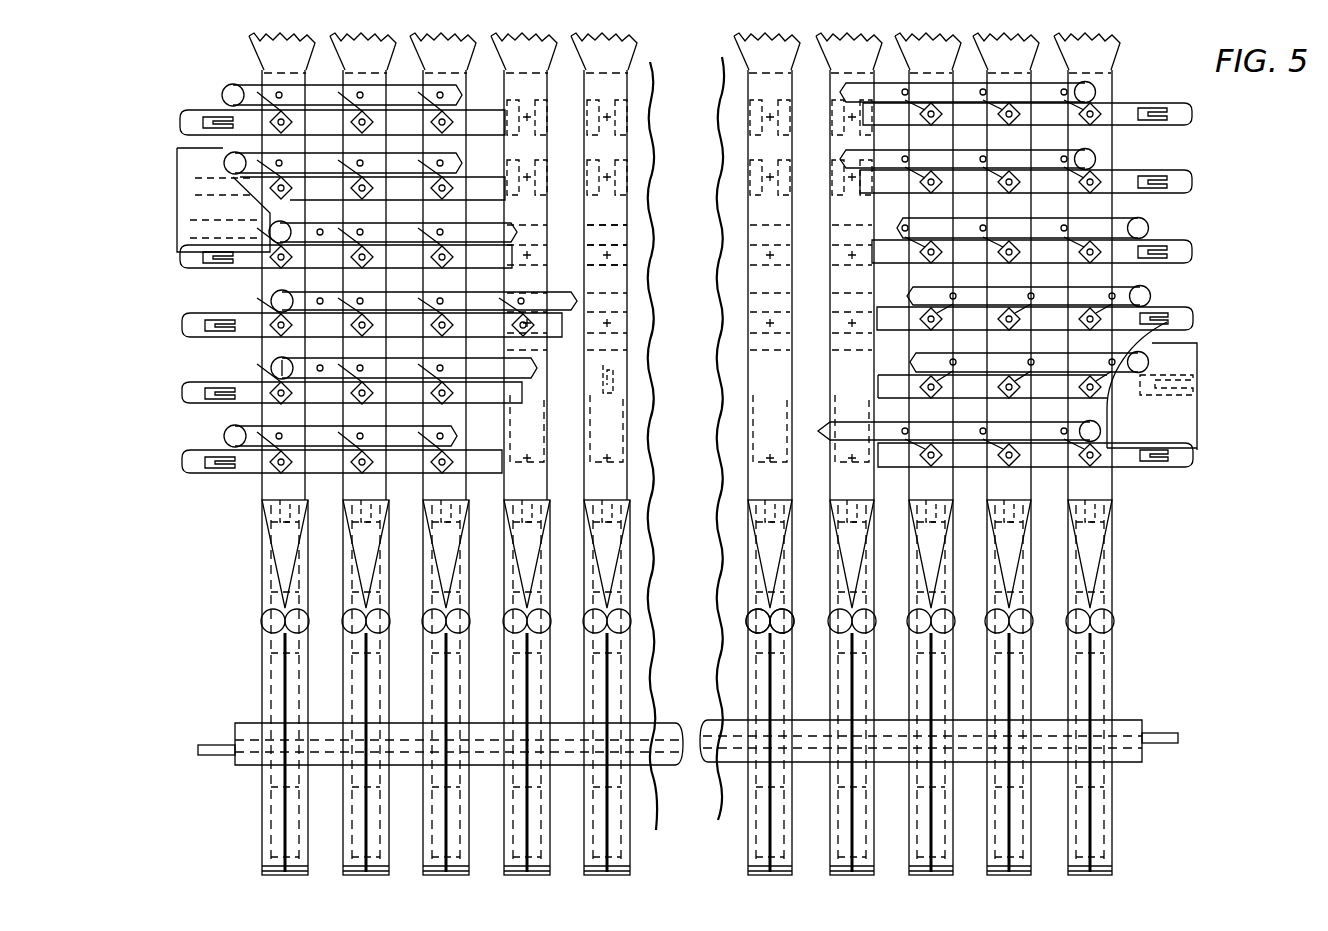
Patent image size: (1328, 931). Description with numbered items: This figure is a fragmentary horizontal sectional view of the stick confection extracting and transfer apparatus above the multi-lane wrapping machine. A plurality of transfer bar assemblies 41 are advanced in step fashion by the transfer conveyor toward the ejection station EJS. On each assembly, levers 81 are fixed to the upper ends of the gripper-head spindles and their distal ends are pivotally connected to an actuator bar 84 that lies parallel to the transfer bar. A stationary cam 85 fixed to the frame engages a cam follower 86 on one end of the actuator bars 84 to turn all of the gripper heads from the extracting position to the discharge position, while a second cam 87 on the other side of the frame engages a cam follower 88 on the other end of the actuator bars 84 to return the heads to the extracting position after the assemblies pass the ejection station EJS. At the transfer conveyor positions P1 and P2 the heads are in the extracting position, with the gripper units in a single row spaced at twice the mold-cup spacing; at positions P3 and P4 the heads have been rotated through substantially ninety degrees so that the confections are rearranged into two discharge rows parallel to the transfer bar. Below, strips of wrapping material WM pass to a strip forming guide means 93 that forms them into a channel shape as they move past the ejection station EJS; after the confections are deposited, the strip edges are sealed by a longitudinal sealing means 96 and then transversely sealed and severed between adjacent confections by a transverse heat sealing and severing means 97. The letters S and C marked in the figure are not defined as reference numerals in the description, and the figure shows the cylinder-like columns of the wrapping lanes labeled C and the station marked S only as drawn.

The wrapping material WM is at (620, 48).
The transfer conveyor position P1 is at (636, 117).
The transfer conveyor position P2 is at (637, 180).
The transfer conveyor position P3 is at (628, 262).
The transfer conveyor position P4 is at (636, 318).
The ejection station EJS is at (638, 337).
The station S is at (630, 375).
The cylinder C is at (745, 183).
The strip forming guide means 93 is at (633, 480).
The stationary cam 85 is at (222, 149).
The cam follower 86 is at (232, 168).
The transverse heat sealing and severing means 97 is at (245, 727).
The transfer bar assembly 41 is at (1134, 100).
The lever 81 is at (1105, 168).
The actuator bar 84 is at (1095, 218).
The second cam 87 is at (1167, 319).
The cam follower 88 is at (1152, 363).
The longitudinal sealing means 96 is at (757, 612).